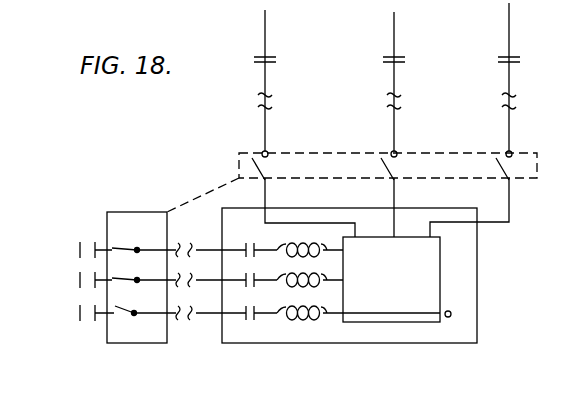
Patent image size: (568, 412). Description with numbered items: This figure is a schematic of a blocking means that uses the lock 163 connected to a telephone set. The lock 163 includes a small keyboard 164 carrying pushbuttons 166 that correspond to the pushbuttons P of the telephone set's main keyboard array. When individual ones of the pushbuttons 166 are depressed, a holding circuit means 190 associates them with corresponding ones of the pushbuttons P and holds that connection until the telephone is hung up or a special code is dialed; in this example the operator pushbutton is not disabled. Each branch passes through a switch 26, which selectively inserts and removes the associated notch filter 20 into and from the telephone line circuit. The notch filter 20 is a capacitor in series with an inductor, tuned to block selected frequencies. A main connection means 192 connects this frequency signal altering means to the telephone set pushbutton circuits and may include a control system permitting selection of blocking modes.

The pushbuttons P is at (379, 59).
The lock 163 is at (122, 189).
The holding circuit means 190 is at (145, 224).
The switch 26 is at (124, 328).
The pushbuttons 166 is at (78, 314).
The keyboard 164 is at (84, 333).
The notch filter 20 is at (276, 325).
The main connection means 192 is at (446, 276).